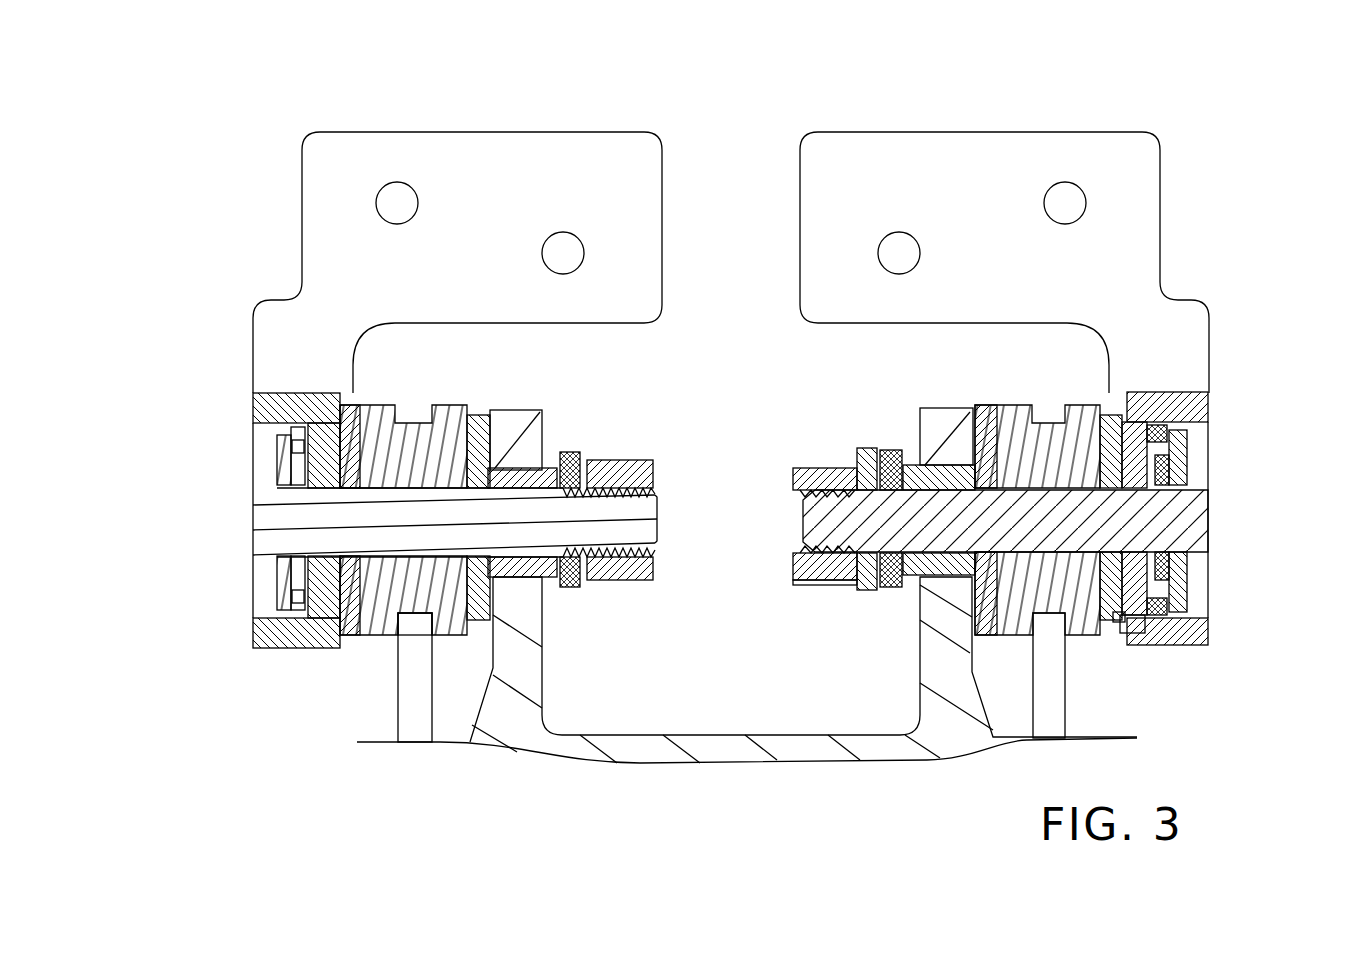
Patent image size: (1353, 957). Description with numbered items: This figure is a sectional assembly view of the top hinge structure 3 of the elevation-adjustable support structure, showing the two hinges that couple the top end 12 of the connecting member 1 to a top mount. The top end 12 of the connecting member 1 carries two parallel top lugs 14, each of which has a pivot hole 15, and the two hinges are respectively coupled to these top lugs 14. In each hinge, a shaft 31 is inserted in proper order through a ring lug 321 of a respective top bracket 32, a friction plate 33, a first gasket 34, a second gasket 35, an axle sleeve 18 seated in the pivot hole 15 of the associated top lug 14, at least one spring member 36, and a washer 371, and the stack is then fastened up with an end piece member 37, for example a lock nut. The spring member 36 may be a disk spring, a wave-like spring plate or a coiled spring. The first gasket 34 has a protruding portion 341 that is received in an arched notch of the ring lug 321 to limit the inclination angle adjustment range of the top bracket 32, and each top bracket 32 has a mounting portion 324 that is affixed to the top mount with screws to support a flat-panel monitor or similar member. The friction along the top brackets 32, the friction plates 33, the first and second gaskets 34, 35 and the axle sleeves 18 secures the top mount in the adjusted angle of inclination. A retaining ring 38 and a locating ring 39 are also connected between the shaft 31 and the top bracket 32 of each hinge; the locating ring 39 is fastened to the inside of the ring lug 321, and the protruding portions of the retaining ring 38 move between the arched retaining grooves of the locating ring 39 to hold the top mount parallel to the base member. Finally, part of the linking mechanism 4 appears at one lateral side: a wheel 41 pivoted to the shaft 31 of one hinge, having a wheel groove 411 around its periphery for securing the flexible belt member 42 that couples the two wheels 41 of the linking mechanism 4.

The connecting member 1 is at (747, 710).
The top end 12 is at (653, 696).
The top lugs 14 is at (935, 660).
The pivot hole 15 is at (519, 410).
The axle sleeve 18 is at (530, 590).
The top hinge structure 3 is at (1210, 252).
The shaft 31 is at (330, 528).
The top bracket 32 is at (757, 337).
The ring lug 321 is at (1177, 645).
The mounting portion 324 is at (470, 185).
The friction plate 33 is at (1140, 425).
The first gasket 34 is at (1103, 638).
The protruding portion 341 is at (1135, 645).
The second gasket 35 is at (472, 410).
The spring member 36 is at (593, 450).
The end piece member 37 is at (605, 448).
The washer 371 is at (835, 578).
The retaining ring 38 is at (280, 460).
The locating ring 39 is at (280, 578).
The linking mechanism 4 is at (383, 688).
The wheel 41 is at (387, 625).
The wheel groove 411 is at (450, 622).
The flexible belt member 42 is at (415, 715).